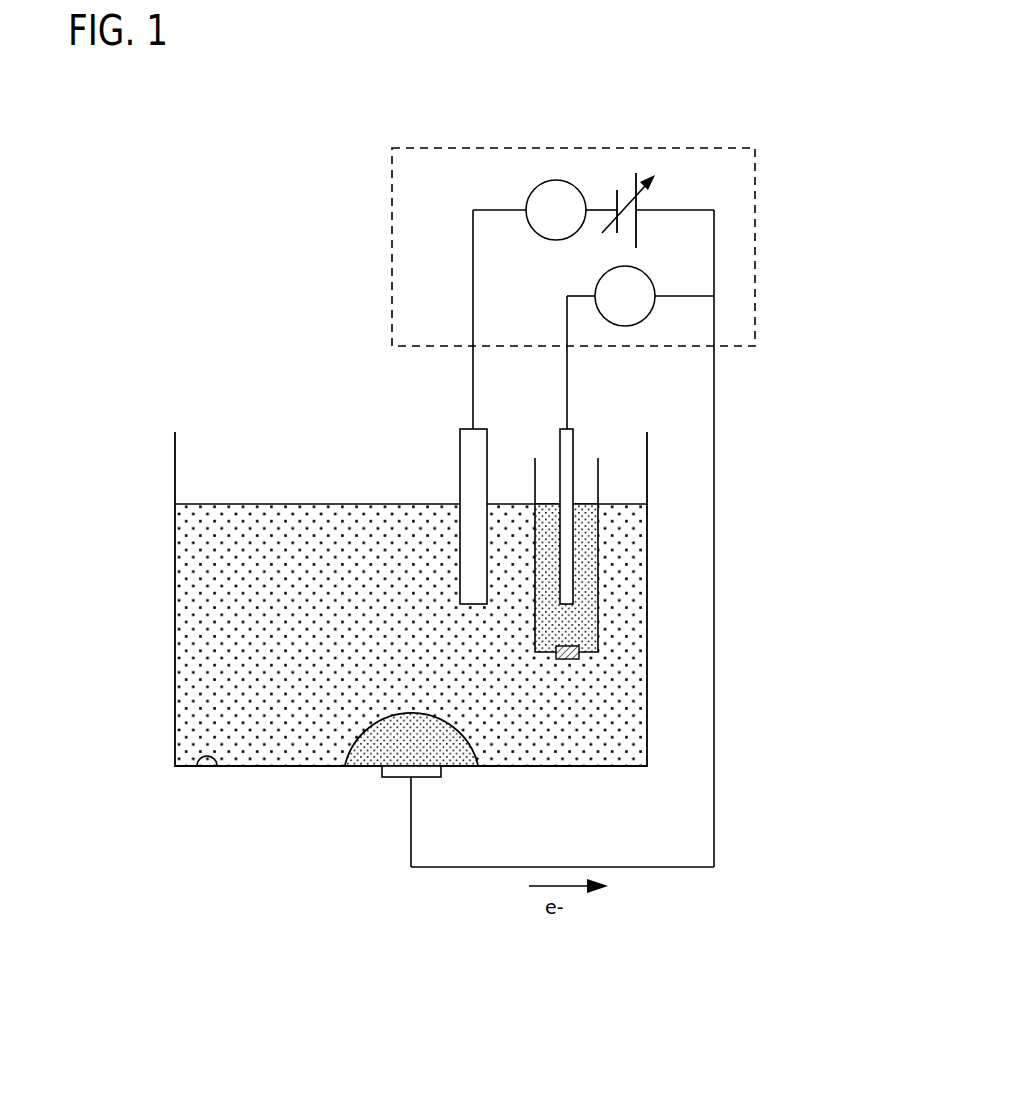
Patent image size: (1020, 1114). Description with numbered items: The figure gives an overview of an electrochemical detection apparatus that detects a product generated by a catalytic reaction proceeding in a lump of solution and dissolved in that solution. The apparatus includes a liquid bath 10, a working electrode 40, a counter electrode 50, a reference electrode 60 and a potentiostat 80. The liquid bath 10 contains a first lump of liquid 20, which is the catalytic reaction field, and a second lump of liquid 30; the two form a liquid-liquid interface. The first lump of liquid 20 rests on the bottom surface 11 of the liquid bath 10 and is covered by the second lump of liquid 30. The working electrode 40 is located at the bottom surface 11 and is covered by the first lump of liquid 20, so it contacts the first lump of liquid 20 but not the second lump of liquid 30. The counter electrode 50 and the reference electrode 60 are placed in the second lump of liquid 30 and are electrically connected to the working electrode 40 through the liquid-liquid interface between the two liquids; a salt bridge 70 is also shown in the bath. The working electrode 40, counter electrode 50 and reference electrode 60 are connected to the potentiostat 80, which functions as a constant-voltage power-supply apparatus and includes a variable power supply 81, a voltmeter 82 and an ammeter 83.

The liquid bath 10 is at (175, 466).
The bottom surface 11 is at (197, 758).
The first lump of liquid 20 is at (365, 742).
The second lump of liquid 30 is at (290, 512).
The working electrode 40 is at (390, 778).
The counter electrode 50 is at (460, 432).
The reference electrode 60 is at (573, 432).
The salt bridge 70 is at (565, 660).
The potentiostat 80 is at (433, 148).
The variable power supply 81 is at (642, 170).
The voltmeter 82 is at (650, 267).
The ammeter 83 is at (553, 182).